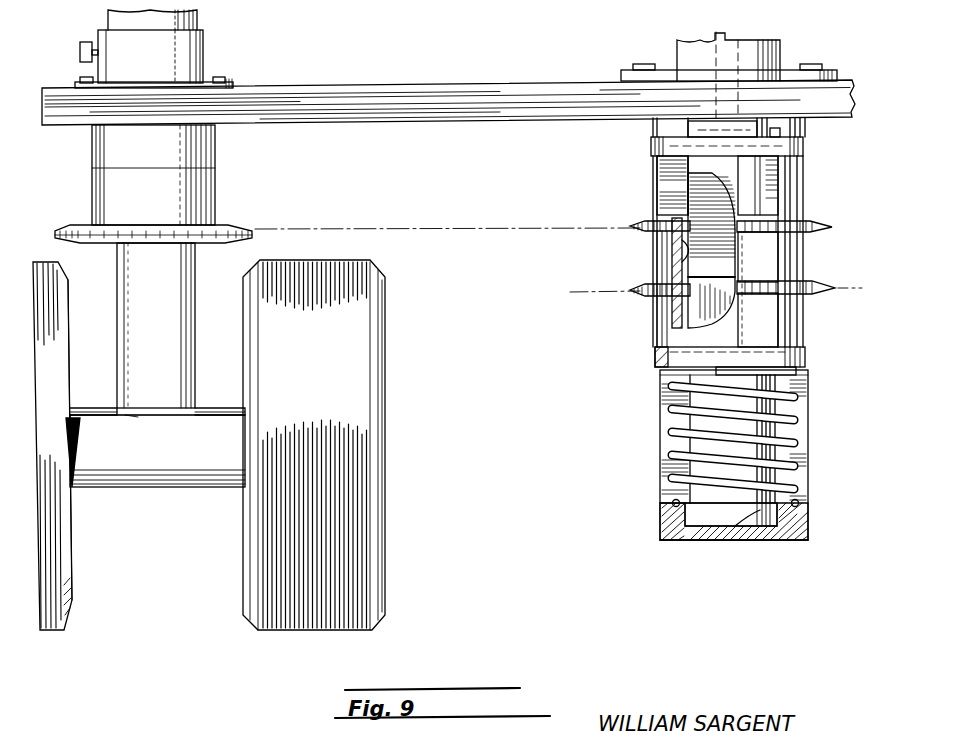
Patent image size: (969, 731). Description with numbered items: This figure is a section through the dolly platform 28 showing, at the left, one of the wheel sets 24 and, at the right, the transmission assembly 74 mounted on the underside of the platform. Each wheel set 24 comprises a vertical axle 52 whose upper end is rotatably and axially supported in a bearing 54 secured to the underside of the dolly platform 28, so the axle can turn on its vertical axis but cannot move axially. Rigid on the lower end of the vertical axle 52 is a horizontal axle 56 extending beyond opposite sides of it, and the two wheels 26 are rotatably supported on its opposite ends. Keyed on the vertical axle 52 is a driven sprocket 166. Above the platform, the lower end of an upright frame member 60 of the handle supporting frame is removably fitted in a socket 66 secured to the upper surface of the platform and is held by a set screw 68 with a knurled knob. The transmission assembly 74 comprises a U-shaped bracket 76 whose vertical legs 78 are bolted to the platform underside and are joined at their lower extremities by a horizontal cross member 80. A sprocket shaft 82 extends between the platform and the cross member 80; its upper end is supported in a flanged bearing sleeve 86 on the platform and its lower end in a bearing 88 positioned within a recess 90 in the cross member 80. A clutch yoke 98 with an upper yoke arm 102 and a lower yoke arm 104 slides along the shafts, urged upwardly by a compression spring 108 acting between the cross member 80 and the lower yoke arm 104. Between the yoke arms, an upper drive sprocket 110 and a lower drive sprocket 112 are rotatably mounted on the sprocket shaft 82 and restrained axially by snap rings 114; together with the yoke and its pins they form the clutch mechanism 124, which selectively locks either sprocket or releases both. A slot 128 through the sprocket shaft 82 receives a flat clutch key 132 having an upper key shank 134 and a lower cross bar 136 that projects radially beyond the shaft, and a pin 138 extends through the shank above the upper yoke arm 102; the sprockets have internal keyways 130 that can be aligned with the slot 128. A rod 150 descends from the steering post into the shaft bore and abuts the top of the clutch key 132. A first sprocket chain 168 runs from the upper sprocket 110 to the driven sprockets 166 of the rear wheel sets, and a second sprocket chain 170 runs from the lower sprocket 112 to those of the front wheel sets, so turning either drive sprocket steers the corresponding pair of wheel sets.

The wheel set 24 is at (396, 329).
The wheel 26 is at (70, 632).
The dolly platform 28 is at (384, 90).
The vertical axle 52 is at (178, 289).
The bearing 54 is at (215, 150).
The horizontal axle 56 is at (150, 472).
The upright frame member 60 is at (198, 14).
The socket 66 is at (203, 34).
The set screw 68 is at (82, 44).
The transmission assembly 74 is at (622, 304).
The U-shaped bracket 76 is at (650, 396).
The bracket leg 78 is at (660, 448).
The lower cross member 80 is at (797, 530).
The sprocket shaft 82 is at (700, 426).
The flanged bearing sleeve 86 is at (760, 40).
The bearing 88 is at (706, 515).
The recess 90 is at (756, 512).
The clutch yoke 98 is at (642, 360).
The upper yoke arm 102 is at (803, 144).
The lower yoke arm 104 is at (805, 357).
The compression spring 108 is at (668, 486).
The upper drive sprocket 110 is at (803, 258).
The lower drive sprocket 112 is at (803, 320).
The snap ring 114 is at (680, 224).
The clutch mechanism 124 is at (818, 232).
The slot 128 is at (650, 184).
The keyway 130 is at (686, 253).
The clutch key 132 is at (679, 208).
The key shank 134 is at (700, 178).
The cross bar 136 is at (698, 270).
The pin 138 is at (680, 134).
The rod 150 is at (715, 34).
The driven sprocket 166 is at (172, 228).
The first sprocket chain 168 is at (440, 230).
The second sprocket chain 170 is at (570, 300).